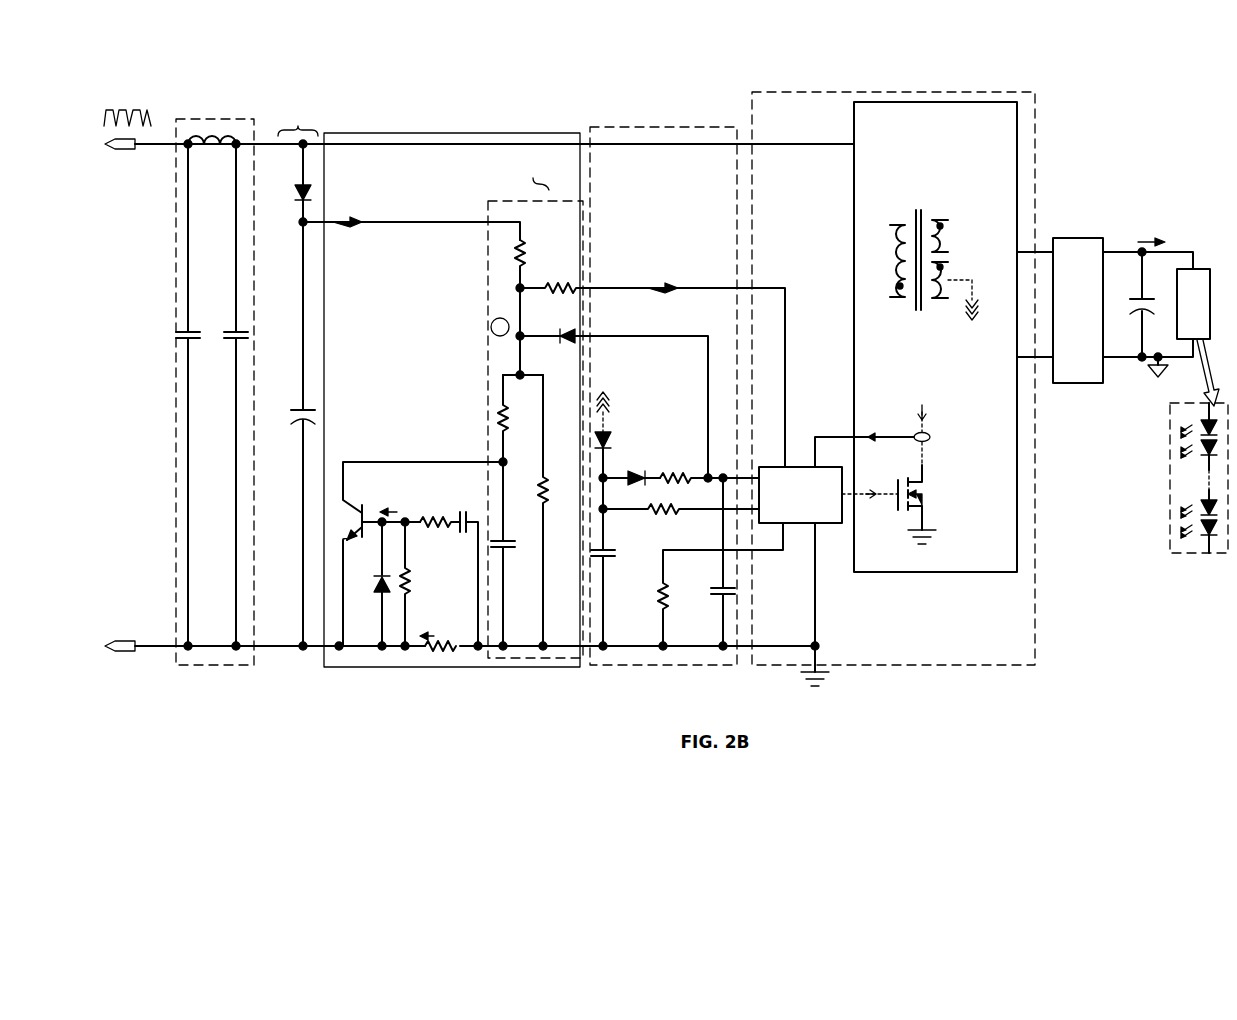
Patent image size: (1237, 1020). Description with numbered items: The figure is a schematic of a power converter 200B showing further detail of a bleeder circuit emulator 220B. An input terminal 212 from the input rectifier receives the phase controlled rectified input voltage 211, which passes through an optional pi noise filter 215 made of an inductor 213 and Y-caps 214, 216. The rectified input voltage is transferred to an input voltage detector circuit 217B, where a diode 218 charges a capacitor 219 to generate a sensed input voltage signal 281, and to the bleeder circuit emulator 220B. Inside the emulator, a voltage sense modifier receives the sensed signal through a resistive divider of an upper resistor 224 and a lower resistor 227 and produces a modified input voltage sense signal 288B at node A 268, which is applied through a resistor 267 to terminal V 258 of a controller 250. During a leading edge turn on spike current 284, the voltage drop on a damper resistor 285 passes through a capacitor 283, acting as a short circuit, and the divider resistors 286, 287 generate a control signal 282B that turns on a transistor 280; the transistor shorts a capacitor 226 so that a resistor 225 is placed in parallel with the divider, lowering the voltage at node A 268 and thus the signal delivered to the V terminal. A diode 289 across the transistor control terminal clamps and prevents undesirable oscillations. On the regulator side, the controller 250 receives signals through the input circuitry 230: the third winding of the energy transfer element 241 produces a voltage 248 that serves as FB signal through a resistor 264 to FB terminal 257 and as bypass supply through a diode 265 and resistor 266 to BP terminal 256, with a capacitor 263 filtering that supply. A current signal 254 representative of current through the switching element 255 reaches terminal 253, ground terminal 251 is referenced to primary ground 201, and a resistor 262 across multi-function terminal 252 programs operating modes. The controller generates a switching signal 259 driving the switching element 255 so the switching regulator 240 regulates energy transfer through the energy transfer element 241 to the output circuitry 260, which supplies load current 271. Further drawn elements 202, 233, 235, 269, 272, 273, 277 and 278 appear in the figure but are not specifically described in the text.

The power converter 200B is at (618, 329).
The primary ground 201 is at (835, 686).
The output ground 202 is at (1152, 380).
The phase controlled rectified input voltage 211 is at (146, 83).
The input terminal 212 is at (150, 144).
The inductor 213 is at (212, 138).
The Y-cap 214 is at (181, 332).
The pi noise filter 215 is at (212, 118).
The Y-cap 216 is at (242, 333).
The input voltage detector circuit 217B is at (307, 119).
The diode 218 is at (295, 202).
The capacitor 219 is at (295, 409).
The bleeder circuit emulator 220B is at (460, 130).
The upper resistor 224 is at (546, 254).
The resistor 225 is at (492, 417).
The capacitor 226 is at (504, 540).
The lower resistor 227 is at (558, 494).
The input circuitry 230 is at (652, 116).
The diode 233 is at (621, 446).
The capacitor 235 is at (616, 555).
The switching regulator 240 is at (896, 92).
The energy transfer element 241 is at (904, 217).
The voltage 248 is at (612, 394).
The controller 250 is at (790, 467).
The ground terminal G 251 is at (831, 542).
The multi-function terminal R 252 is at (791, 542).
The terminal Isns 253 is at (832, 465).
The current signal 254 is at (930, 420).
The switching element SW 255 is at (930, 490).
The BP terminal 256 is at (736, 469).
The FB terminal 257 is at (732, 518).
The terminal V 258 is at (773, 461).
The switching signal 259 is at (867, 498).
The output circuitry 260 is at (1074, 240).
The resistor 262 is at (684, 592).
The capacitor 263 is at (714, 588).
The resistor 264 is at (666, 519).
The diode 265 is at (632, 476).
The resistor 266 is at (672, 476).
The resistor 267 is at (546, 284).
The node A 268 is at (486, 322).
The diode 269 is at (544, 331).
The load current Io 271 is at (1148, 228).
The output voltage 272 is at (1210, 240).
The load 273 is at (1206, 320).
The output capacitor C0 277 is at (1130, 312).
The LED string 278 is at (1188, 556).
The transistor Q1B 280 is at (343, 500).
The sensed input voltage signal U_V_SENSE 281 is at (358, 190).
The control signal U_CNTRL 282B is at (394, 502).
The capacitor 283 is at (458, 516).
The leading edge turn on spike current 284 is at (425, 652).
The damper resistor R_Damp 285 is at (456, 652).
The divider resistor 286 is at (422, 518).
The divider resistor 287 is at (412, 585).
The modified input voltage sense signal U_V_SENSE_MOD 288B is at (650, 256).
The diode 289 is at (372, 590).